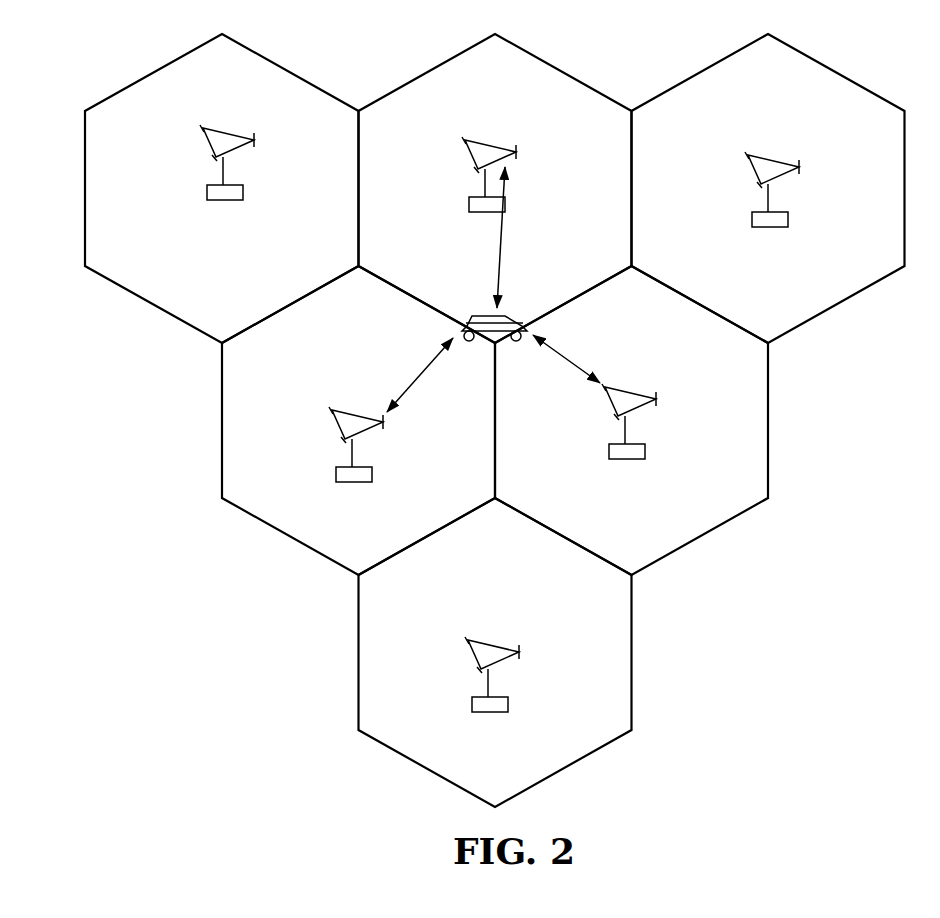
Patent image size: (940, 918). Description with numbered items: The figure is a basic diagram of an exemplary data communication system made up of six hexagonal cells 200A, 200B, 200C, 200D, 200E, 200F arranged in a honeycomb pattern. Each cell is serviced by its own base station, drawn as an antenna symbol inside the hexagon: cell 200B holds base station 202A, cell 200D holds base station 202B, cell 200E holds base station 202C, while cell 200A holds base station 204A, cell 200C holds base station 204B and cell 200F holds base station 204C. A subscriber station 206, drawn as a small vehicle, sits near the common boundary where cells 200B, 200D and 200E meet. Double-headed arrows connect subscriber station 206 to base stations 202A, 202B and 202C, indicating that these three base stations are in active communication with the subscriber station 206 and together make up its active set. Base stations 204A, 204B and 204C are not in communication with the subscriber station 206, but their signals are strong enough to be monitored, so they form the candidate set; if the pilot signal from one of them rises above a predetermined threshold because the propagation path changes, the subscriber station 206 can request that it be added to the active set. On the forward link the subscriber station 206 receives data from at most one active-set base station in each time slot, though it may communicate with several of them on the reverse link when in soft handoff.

The cell 200A is at (168, 64).
The cell 200B is at (455, 57).
The cell 200C is at (803, 54).
The cell 200D is at (222, 432).
The cell 200E is at (768, 430).
The cell 200F is at (633, 670).
The base station 202A is at (477, 142).
The base station 202B is at (348, 412).
The base station 202C is at (627, 387).
The base station 204A is at (223, 128).
The base station 204B is at (767, 157).
The base station 204C is at (487, 644).
The subscriber station 206 is at (487, 313).